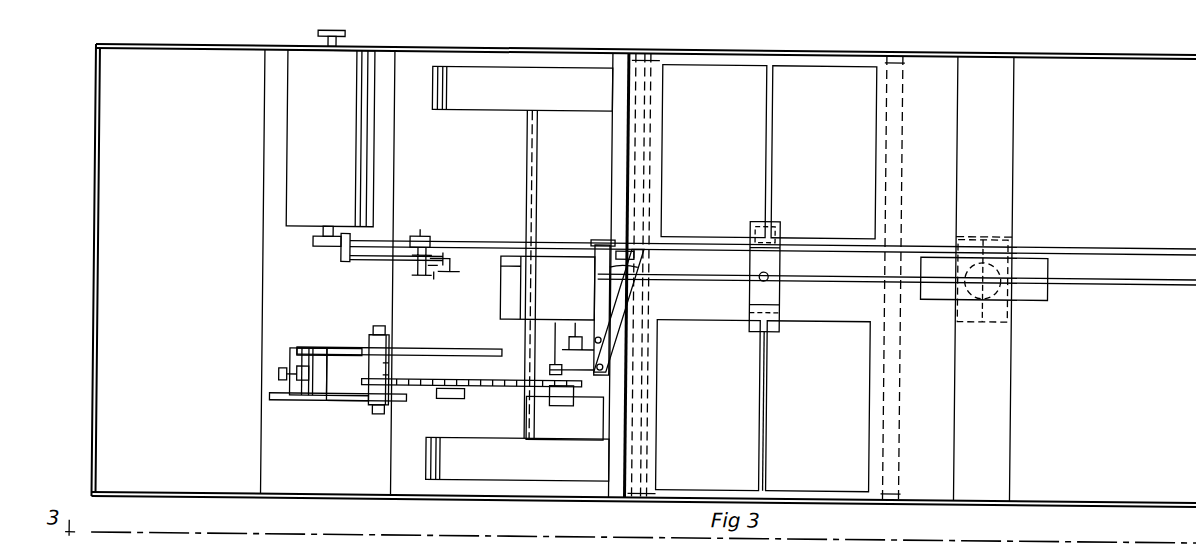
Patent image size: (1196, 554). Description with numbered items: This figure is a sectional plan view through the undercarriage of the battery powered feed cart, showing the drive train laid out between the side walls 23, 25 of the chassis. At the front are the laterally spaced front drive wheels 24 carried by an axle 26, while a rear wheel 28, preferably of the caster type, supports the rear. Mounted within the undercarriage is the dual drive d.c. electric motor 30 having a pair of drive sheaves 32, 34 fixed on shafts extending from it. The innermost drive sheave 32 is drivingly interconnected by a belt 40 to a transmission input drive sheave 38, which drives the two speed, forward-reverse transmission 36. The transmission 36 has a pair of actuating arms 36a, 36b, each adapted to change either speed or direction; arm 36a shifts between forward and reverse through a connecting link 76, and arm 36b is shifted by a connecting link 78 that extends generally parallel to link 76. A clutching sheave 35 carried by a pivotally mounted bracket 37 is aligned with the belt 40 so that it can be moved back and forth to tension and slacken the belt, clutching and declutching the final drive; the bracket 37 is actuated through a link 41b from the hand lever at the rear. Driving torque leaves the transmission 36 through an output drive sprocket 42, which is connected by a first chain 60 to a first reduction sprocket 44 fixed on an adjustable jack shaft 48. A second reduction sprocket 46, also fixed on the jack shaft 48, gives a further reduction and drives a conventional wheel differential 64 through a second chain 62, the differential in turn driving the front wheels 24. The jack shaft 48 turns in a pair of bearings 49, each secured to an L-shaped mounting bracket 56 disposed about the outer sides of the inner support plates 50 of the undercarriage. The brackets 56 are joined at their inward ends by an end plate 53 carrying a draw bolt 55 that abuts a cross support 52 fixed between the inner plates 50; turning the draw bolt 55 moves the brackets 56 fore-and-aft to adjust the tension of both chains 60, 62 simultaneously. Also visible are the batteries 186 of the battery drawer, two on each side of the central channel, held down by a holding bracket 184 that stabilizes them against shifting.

The side wall 23 is at (1106, 493).
The front drive wheels 24 is at (519, 273).
The side wall 25 is at (1152, 42).
The axle 26 is at (528, 429).
The rear wheel 28 is at (1038, 286).
The dual drive d.c. electric motor 30 is at (330, 138).
The drive sheave 32 is at (316, 246).
The drive sheave 34 is at (346, 28).
The clutching sheave 35 is at (440, 226).
The two speed, forward-reverse transmission 36 is at (547, 288).
The transmission actuating arm 36a is at (642, 295).
The transmission actuating arm 36b is at (638, 262).
The pivotally mounted bracket 37 is at (400, 269).
The transmission input drive sheave 38 is at (601, 234).
The belt 40 is at (496, 232).
The link 41b is at (442, 272).
The output drive sprocket 42 is at (505, 330).
The first reduction sprocket 44 is at (345, 398).
The second reduction sprocket 46 is at (480, 350).
The adjustable jack shaft 48 is at (396, 348).
The bearing 49 is at (382, 332).
The inner support plate 50 is at (340, 346).
The cross support 52 is at (291, 346).
The end plate 53 is at (300, 375).
The draw bolt 55 is at (282, 372).
The L-shaped mounting bracket 56 is at (312, 346).
The first chain 60 is at (461, 385).
The second chain 62 is at (452, 395).
The wheel differential 64 is at (556, 401).
The connecting link 76 is at (840, 290).
The connecting link 78 is at (818, 257).
The holding bracket 184 is at (783, 288).
The batteries 186 is at (766, 278).